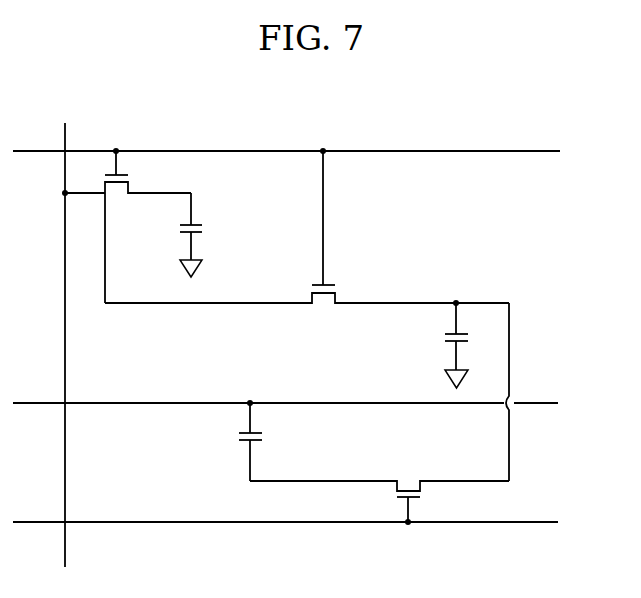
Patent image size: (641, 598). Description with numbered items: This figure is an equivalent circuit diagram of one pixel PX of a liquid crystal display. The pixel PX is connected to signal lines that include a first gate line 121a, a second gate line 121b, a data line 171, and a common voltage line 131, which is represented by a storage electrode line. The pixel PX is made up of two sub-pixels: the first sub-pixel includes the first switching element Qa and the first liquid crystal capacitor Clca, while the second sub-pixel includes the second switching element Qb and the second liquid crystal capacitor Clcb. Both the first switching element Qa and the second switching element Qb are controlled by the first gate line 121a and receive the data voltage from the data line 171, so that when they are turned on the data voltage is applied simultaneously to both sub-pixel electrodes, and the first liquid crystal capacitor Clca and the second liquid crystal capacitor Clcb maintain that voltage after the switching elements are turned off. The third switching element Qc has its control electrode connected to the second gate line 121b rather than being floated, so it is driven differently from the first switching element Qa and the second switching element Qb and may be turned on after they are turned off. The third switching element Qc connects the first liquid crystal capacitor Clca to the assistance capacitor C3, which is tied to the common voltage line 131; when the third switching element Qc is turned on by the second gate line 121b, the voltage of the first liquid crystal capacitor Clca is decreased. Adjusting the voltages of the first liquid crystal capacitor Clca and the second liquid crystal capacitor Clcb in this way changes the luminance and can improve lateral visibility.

The data line 171 is at (67, 329).
The first gate line 121a is at (309, 151).
The common voltage line 131 is at (305, 402).
The second gate line 121b is at (308, 522).
The pixel PX is at (286, 103).
The first switching element Qa is at (307, 314).
The second switching element Qb is at (126, 225).
The third switching element Qc is at (379, 488).
The first liquid crystal capacitor Clca is at (434, 344).
The second liquid crystal capacitor Clcb is at (212, 235).
The assistance capacitor C3 is at (235, 440).